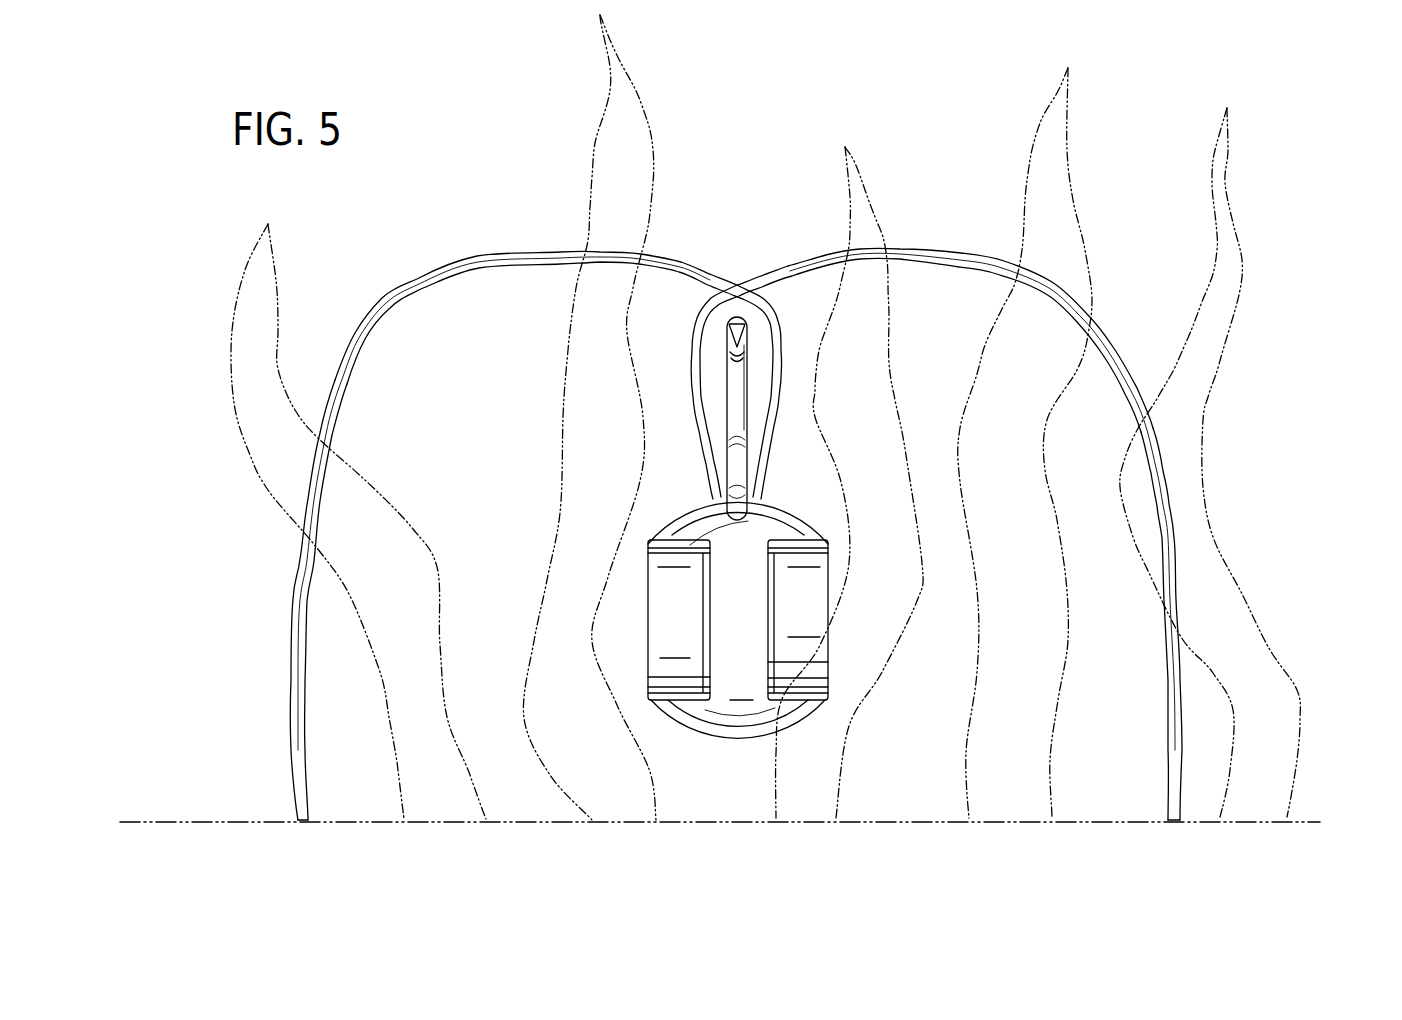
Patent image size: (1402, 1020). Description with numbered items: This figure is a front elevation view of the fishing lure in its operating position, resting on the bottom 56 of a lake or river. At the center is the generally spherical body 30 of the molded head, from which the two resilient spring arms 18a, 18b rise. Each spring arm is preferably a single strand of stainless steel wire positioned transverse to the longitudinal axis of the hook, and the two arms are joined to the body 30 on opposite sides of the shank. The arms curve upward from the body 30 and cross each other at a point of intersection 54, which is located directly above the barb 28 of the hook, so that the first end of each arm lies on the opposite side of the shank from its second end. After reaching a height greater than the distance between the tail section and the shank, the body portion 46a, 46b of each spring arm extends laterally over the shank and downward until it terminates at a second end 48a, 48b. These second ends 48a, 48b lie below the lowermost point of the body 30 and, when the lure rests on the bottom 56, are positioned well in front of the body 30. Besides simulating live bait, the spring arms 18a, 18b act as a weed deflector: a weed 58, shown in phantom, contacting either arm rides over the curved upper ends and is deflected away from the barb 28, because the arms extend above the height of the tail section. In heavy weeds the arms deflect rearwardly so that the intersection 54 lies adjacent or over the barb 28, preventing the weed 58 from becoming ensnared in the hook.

The spring arm 18a is at (486, 514).
The spring arm 18b is at (990, 534).
The barb 28 is at (744, 326).
The body 30 is at (704, 736).
The body portion of spring arm 46a is at (425, 287).
The body portion of spring arm 46b is at (1114, 342).
The second end of spring arm 48a is at (1177, 822).
The second end of spring arm 48b is at (303, 824).
The point of intersection 54 is at (735, 286).
The bottom 56 is at (887, 823).
The weed 58 is at (1277, 723).